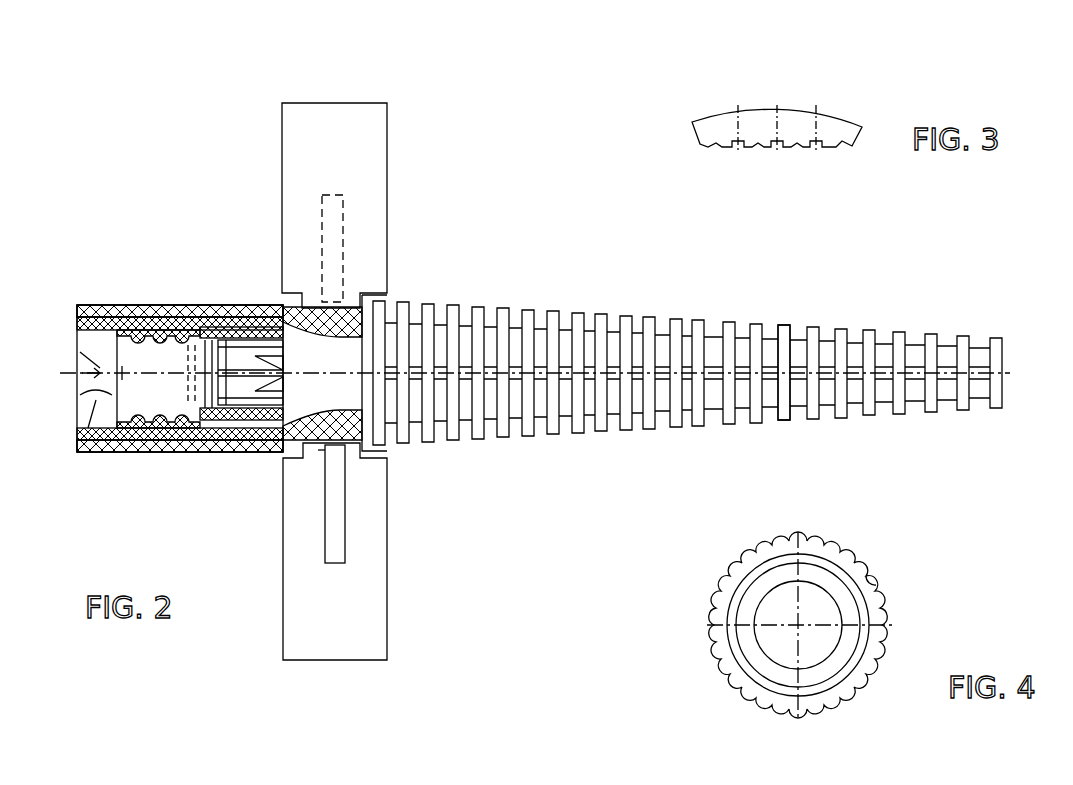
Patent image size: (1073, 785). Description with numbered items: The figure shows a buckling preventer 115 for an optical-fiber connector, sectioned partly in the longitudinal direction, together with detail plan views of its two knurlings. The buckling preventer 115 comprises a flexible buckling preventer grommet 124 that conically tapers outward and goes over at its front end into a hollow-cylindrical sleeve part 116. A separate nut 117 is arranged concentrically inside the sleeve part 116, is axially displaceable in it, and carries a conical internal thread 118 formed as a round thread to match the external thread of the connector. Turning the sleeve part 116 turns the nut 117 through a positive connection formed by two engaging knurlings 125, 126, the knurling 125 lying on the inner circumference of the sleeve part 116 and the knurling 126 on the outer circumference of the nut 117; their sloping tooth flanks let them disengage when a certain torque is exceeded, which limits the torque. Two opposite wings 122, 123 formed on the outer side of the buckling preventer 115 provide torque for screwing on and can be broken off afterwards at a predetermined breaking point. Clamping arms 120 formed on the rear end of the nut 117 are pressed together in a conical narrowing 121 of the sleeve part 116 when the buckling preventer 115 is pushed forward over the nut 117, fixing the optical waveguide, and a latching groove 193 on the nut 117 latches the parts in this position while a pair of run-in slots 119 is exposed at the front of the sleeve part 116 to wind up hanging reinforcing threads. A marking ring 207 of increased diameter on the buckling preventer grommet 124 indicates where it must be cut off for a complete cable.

In FIG. 2, the buckling preventer 115 is at (486, 256).
In FIG. 2, the sleeve part 116 is at (183, 305).
In FIG. 3, the sleeve part 116 is at (764, 113).
In FIG. 2, the nut 117 is at (92, 305).
In FIG. 4, the nut 117 is at (735, 675).
In FIG. 2, the conical internal thread 118 is at (147, 310).
In FIG. 4, the conical internal thread 118 is at (825, 670).
In FIG. 2, the run-in slots 119 is at (82, 452).
In FIG. 2, the clamping arms 120 is at (266, 305).
In FIG. 2, the conical narrowing 121 is at (303, 395).
In FIG. 2, the wing 122 is at (335, 103).
In FIG. 2, the wing 123 is at (345, 660).
In FIG. 2, the buckling preventer grommet 124 is at (603, 423).
In FIG. 3, the knurling 125 is at (736, 125).
In FIG. 4, the knurling 126 is at (876, 585).
In FIG. 2, the latching groove 193 is at (145, 452).
In FIG. 2, the marking ring 207 is at (784, 323).